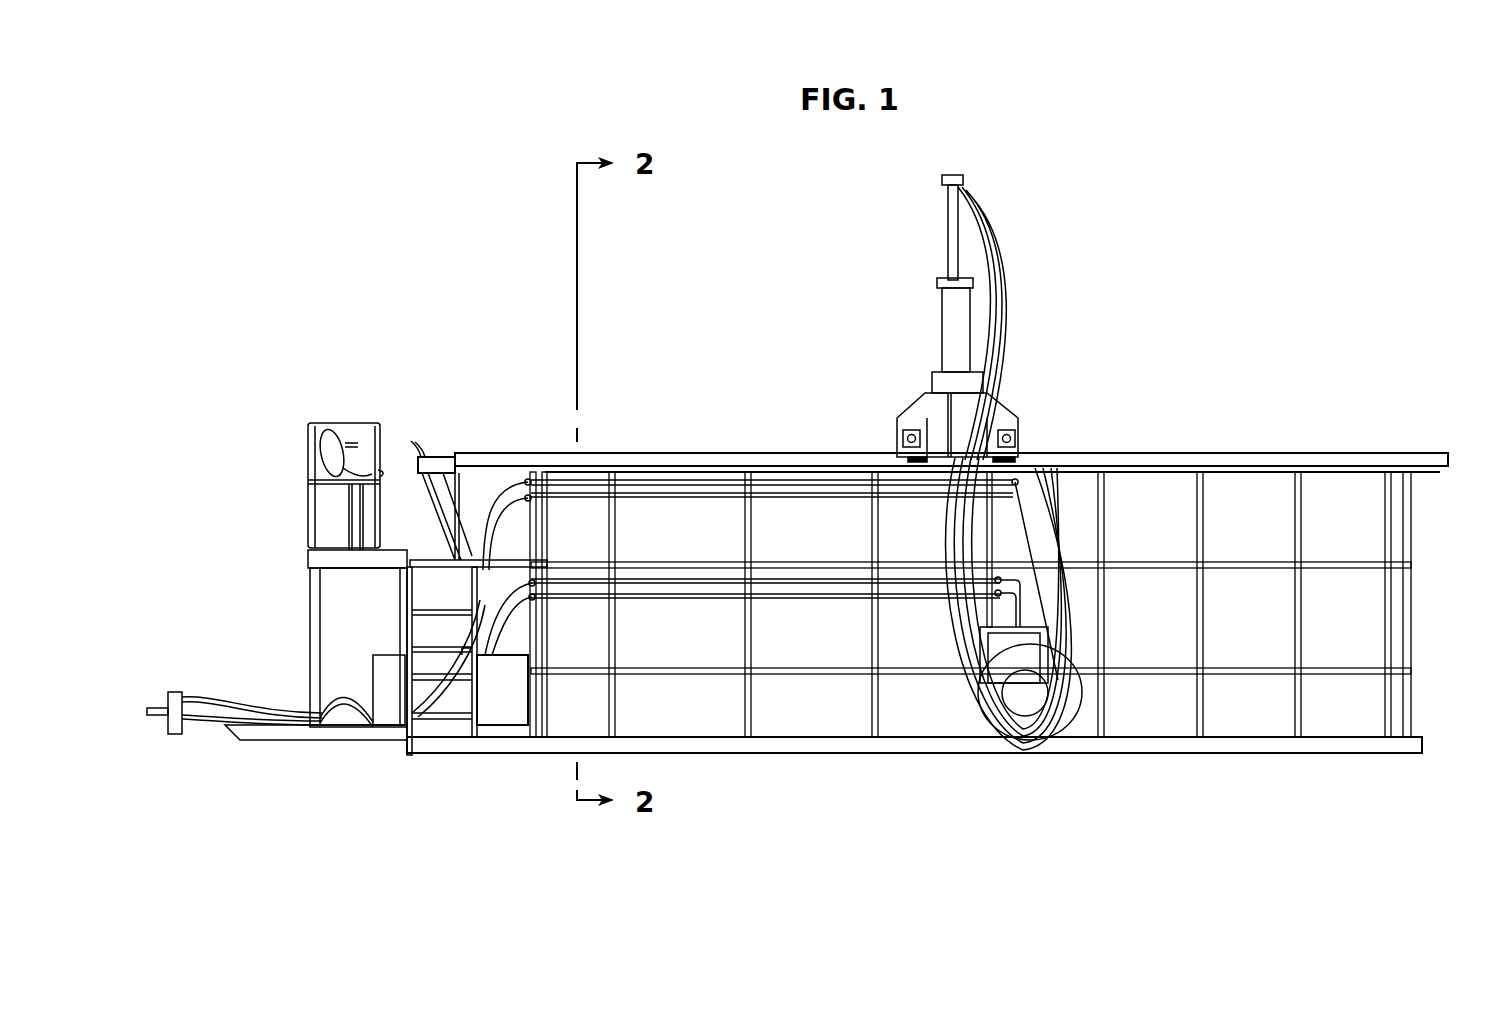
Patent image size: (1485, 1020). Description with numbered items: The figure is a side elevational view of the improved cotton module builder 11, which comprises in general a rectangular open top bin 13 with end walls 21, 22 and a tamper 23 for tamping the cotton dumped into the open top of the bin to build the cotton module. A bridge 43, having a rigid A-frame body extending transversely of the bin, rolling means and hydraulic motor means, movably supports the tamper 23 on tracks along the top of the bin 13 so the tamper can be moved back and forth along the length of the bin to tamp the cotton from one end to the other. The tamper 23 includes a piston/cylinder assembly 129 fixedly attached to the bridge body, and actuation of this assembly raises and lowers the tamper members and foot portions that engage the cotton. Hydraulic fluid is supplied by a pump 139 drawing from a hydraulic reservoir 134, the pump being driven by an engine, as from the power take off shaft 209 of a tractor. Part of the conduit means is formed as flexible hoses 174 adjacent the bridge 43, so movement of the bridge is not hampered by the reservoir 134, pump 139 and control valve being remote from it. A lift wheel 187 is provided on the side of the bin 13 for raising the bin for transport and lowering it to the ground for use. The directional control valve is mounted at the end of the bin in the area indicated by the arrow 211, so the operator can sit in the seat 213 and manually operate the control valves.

The module builder 11 is at (1150, 249).
The rectangular open top bin 13 is at (1416, 547).
The end wall 21 is at (1416, 630).
The end wall 22 is at (528, 663).
The tamper 23 is at (1002, 276).
The bridge 43 is at (1024, 417).
The piston/cylinder assembly 129 is at (952, 327).
The hydraulic reservoir 134 is at (495, 713).
The pump 139 is at (176, 692).
The flexible hoses 174 is at (925, 527).
The lift wheel 187 is at (1054, 758).
The power take off shaft 209 is at (158, 716).
The arrow indicating control valve area 211 is at (425, 421).
The seat 213 is at (362, 432).